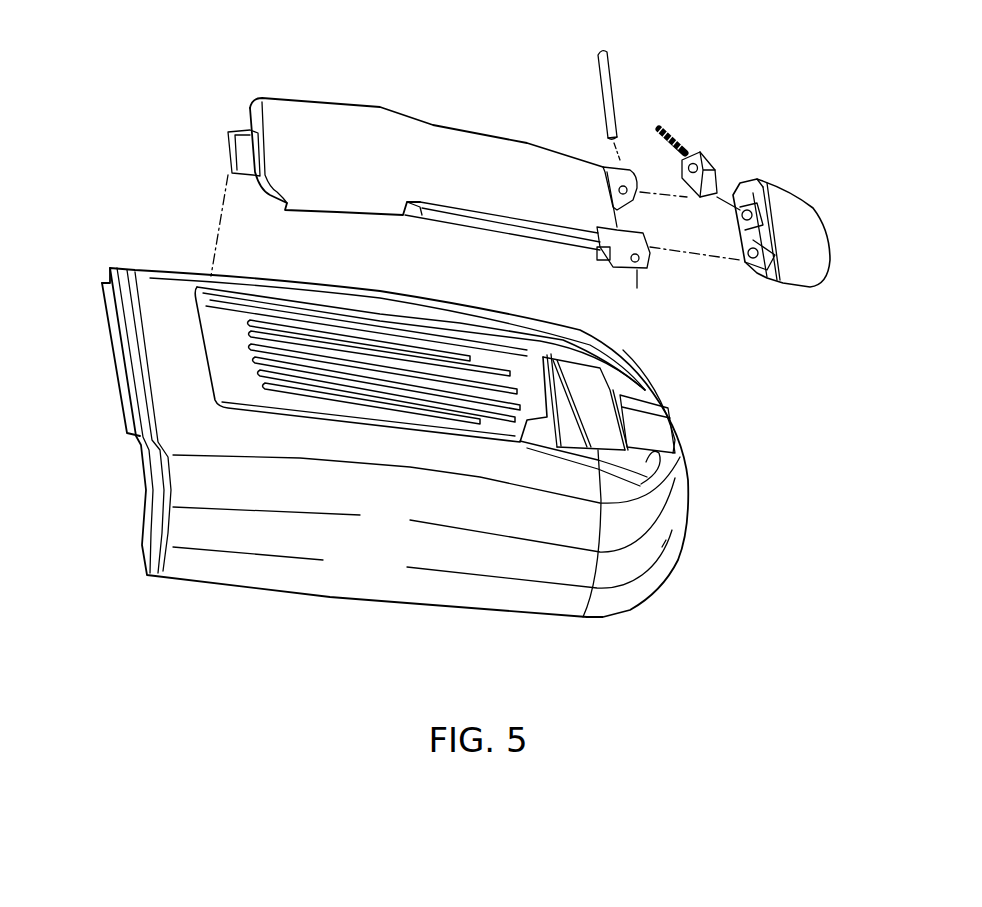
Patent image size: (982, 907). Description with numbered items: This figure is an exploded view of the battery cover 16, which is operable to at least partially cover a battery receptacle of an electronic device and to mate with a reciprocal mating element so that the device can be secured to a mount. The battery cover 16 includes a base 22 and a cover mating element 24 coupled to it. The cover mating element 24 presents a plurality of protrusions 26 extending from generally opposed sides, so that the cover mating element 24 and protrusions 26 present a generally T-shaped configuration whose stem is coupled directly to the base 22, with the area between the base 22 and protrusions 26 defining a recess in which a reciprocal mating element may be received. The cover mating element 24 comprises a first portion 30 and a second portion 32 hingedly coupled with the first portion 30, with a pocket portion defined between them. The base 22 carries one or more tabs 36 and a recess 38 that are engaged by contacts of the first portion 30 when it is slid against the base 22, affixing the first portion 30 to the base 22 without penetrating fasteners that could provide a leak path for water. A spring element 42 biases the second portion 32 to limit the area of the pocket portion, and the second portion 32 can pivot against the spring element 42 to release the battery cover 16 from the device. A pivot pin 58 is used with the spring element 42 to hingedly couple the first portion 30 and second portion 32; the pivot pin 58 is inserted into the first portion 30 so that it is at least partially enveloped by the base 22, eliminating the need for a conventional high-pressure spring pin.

The battery cover 16 is at (146, 158).
The base 22 is at (187, 428).
The cover mating element 24 is at (310, 117).
The protrusions 26 is at (352, 208).
The first portion 30 is at (450, 163).
The second portion 32 is at (787, 210).
The tabs 36 is at (373, 352).
The recess 38 is at (580, 417).
The spring element 42 is at (670, 130).
The pivot pin 58 is at (607, 80).